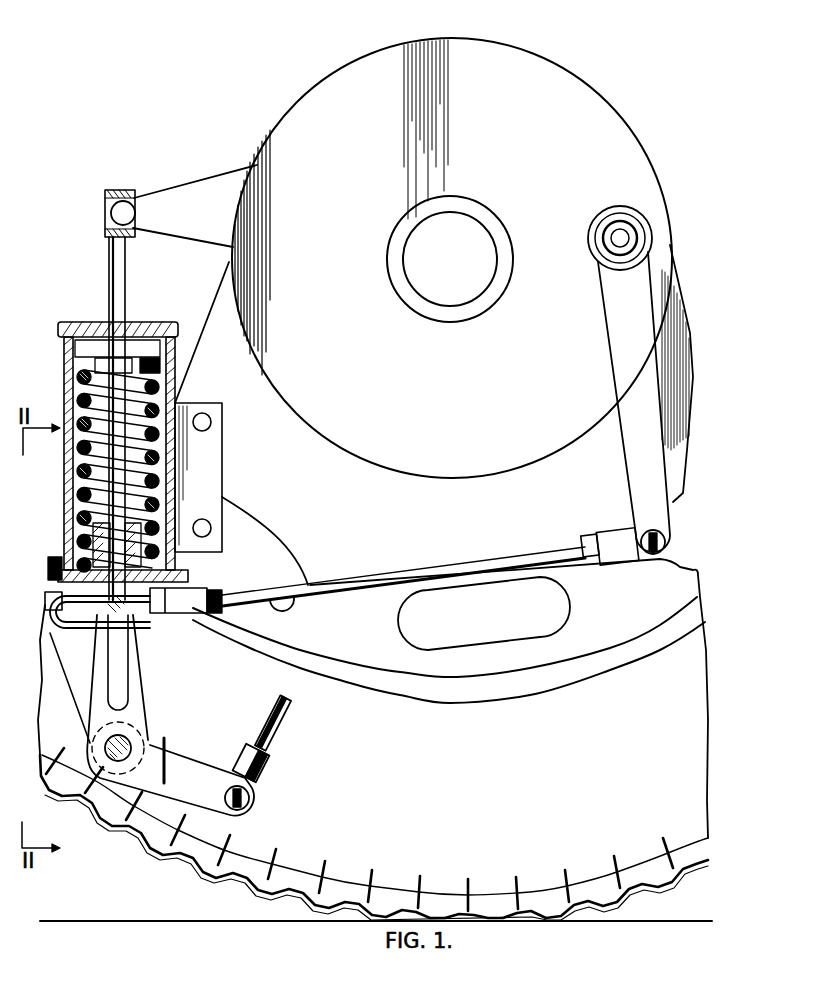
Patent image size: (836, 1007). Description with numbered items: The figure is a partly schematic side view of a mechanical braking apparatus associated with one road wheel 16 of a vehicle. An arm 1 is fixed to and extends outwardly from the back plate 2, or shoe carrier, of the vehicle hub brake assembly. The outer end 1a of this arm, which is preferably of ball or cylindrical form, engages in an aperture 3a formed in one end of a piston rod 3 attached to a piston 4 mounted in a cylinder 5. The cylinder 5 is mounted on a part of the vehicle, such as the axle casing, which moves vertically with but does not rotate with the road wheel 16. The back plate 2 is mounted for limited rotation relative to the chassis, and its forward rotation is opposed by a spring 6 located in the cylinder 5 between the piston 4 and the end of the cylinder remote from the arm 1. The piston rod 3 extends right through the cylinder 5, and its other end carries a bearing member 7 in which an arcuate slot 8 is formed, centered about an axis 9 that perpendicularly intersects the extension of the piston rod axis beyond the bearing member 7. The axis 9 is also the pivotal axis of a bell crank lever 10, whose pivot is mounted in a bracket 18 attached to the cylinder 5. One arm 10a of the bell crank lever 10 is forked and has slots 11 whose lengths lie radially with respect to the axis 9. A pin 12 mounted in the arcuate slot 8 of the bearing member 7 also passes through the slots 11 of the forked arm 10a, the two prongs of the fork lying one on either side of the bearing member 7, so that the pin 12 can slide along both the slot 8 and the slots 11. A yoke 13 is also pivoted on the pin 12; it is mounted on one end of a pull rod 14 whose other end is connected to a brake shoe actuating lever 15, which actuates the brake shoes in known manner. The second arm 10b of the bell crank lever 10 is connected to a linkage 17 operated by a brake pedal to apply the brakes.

The arm 1 is at (205, 192).
The outer end of arm 1a is at (112, 212).
The back plate 2 is at (342, 428).
The piston rod 3 is at (112, 281).
The aperture 3a is at (106, 232).
The piston 4 is at (76, 322).
The cylinder 5 is at (64, 403).
The spring 6 is at (76, 448).
The bearing member 7 is at (55, 628).
The arcuate slot 8 is at (52, 610).
The axis 9 is at (128, 745).
The bell crank lever 10 is at (140, 705).
The forked arm 10a is at (136, 663).
The second arm 10b is at (186, 765).
The slots 11 is at (112, 690).
The pin 12 is at (128, 612).
The yoke 13 is at (160, 606).
The pull rod 14 is at (380, 574).
The brake shoe actuating lever 15 is at (632, 473).
The road wheel 16 is at (690, 678).
The linkage 17 is at (277, 724).
The bracket 18 is at (76, 673).